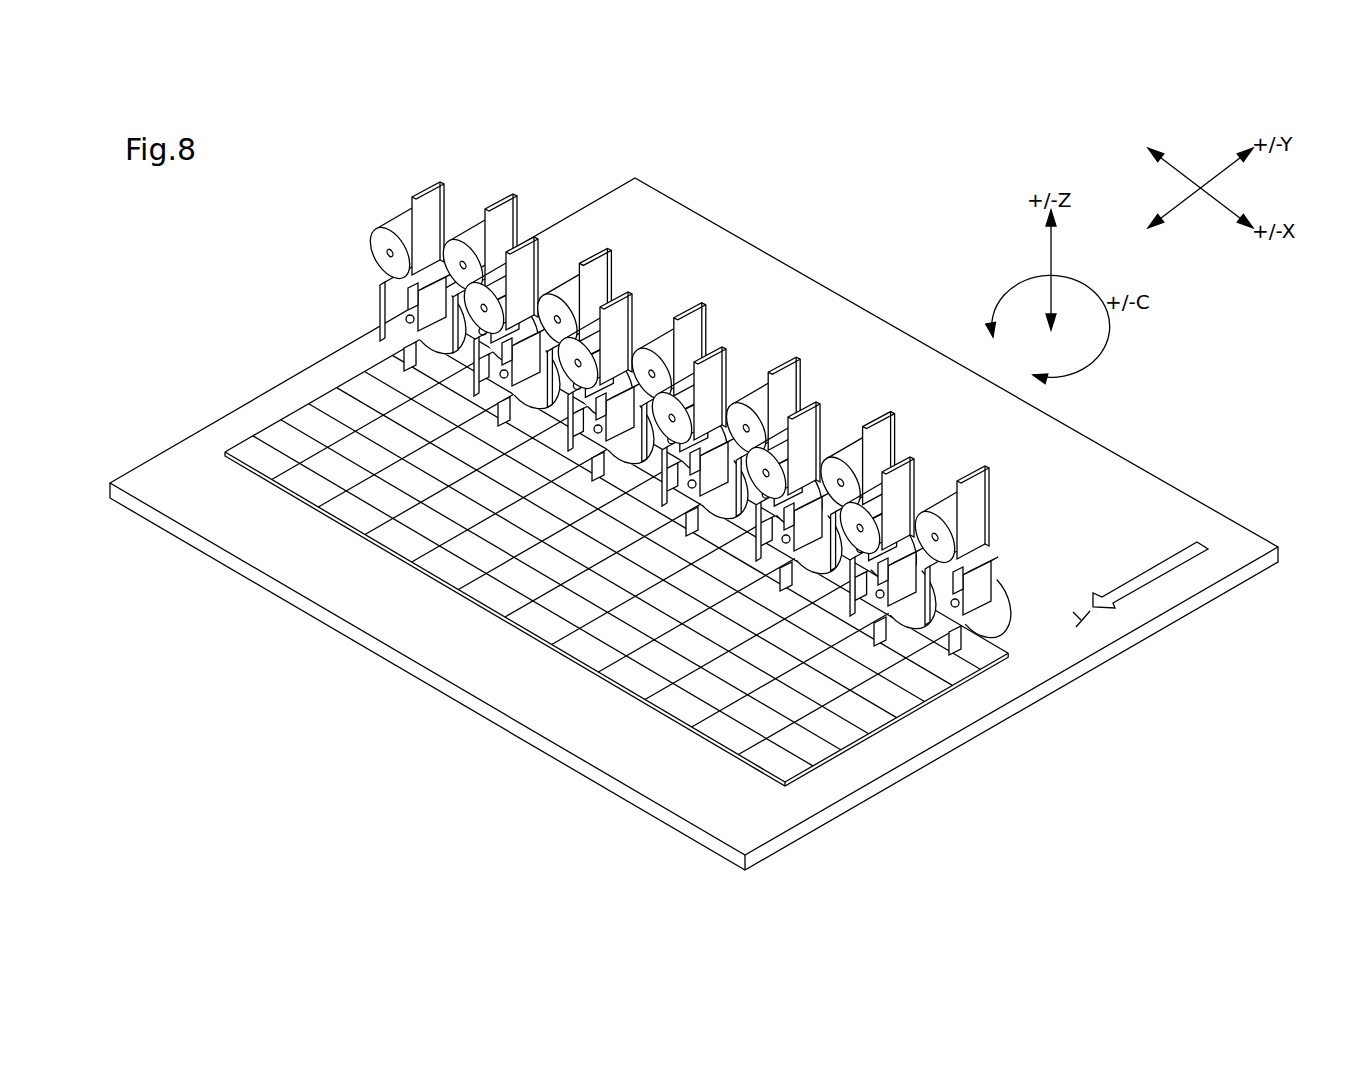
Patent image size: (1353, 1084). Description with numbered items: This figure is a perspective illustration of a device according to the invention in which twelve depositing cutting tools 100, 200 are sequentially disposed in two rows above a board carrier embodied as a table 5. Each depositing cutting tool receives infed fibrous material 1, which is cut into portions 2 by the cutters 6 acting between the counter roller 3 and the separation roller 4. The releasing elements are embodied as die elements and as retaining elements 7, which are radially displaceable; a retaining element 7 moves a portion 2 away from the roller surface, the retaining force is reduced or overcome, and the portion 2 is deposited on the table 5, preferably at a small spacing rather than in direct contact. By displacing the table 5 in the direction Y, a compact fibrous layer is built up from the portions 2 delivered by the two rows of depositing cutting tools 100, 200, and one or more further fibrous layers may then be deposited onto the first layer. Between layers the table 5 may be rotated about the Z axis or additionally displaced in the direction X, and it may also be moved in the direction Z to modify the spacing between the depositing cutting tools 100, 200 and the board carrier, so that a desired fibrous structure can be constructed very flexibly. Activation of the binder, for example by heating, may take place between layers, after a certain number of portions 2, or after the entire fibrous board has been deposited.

The fibrous material 1 is at (978, 486).
The portions 2 is at (984, 654).
The counter roller 3 is at (929, 522).
The separation roller 4 is at (969, 596).
The table 5 is at (1173, 517).
The cutters 6 is at (986, 580).
The retaining elements 7 is at (987, 556).
The depositing cutting tools 100 is at (748, 352).
The depositing cutting tools 200 is at (825, 382).